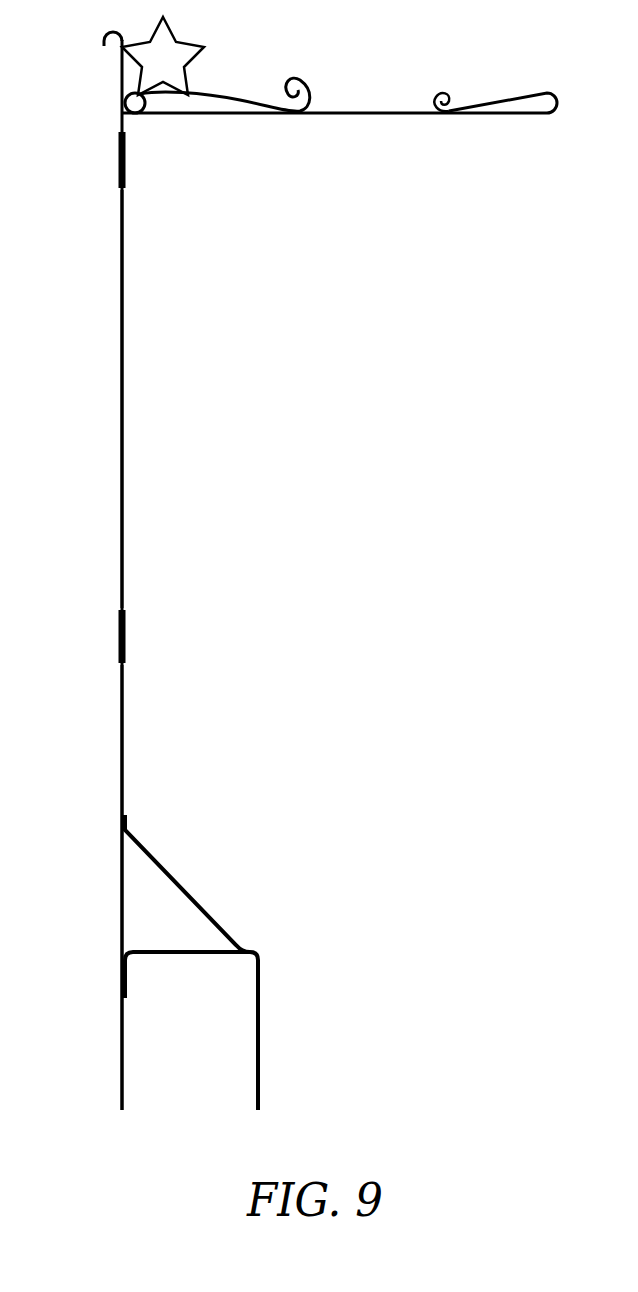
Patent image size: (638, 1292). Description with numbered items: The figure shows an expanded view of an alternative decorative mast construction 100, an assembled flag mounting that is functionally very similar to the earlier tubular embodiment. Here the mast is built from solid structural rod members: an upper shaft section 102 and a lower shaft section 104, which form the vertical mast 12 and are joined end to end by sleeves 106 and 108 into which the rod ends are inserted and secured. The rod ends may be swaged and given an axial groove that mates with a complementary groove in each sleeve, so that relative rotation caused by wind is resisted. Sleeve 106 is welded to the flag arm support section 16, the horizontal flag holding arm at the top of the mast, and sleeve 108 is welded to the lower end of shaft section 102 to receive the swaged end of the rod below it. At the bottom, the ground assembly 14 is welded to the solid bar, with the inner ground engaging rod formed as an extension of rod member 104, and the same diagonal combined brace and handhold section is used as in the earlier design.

The decorative mast construction 100 is at (295, 563).
The pole 12 is at (115, 571).
The base 14 is at (176, 803).
The flag arm support section 16 is at (296, 122).
The shaft section 102 is at (120, 343).
The shaft section 104 is at (120, 735).
The sleeve 106 is at (118, 160).
The sleeve 108 is at (118, 632).